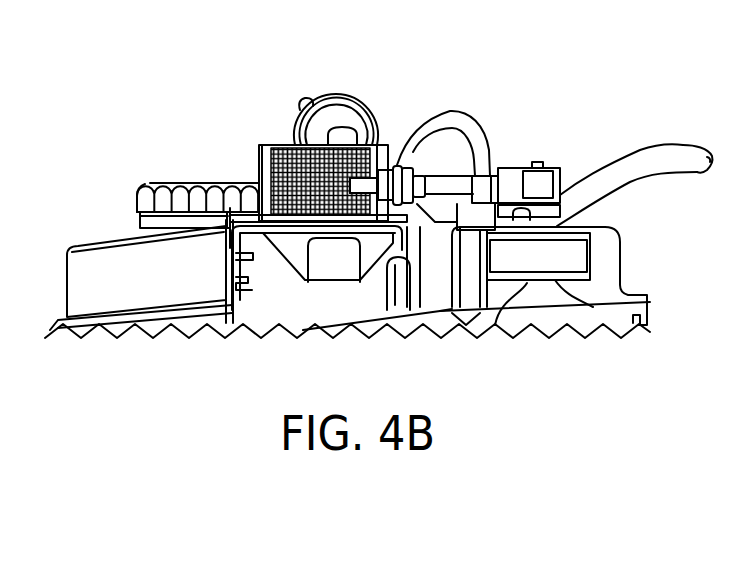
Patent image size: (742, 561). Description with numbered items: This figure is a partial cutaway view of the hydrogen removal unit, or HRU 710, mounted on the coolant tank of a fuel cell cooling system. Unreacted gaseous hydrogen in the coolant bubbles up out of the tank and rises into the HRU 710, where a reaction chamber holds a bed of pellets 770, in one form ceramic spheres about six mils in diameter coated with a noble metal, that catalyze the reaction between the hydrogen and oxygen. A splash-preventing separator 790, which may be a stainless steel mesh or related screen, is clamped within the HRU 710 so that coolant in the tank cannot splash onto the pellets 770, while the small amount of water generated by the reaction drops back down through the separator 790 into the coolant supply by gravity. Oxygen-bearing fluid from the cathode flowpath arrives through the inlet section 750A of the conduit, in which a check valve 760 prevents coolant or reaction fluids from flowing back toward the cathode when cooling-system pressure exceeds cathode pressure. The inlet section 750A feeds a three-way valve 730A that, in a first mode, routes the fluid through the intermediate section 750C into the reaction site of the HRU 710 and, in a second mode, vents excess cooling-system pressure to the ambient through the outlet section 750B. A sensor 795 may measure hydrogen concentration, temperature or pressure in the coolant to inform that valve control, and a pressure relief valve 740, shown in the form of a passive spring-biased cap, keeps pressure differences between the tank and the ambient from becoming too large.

The hydrogen removal unit (HRU) 710 is at (280, 158).
The three-way valve 730A is at (527, 166).
The pressure relief valve 740 is at (148, 193).
The inlet section 750A is at (305, 98).
The outlet section 750B is at (685, 147).
The intermediate section 750C is at (466, 112).
The check valve 760 is at (347, 95).
The pellets 770 is at (297, 180).
The splash-preventing separator 790 is at (368, 222).
The sensor 795 is at (392, 163).